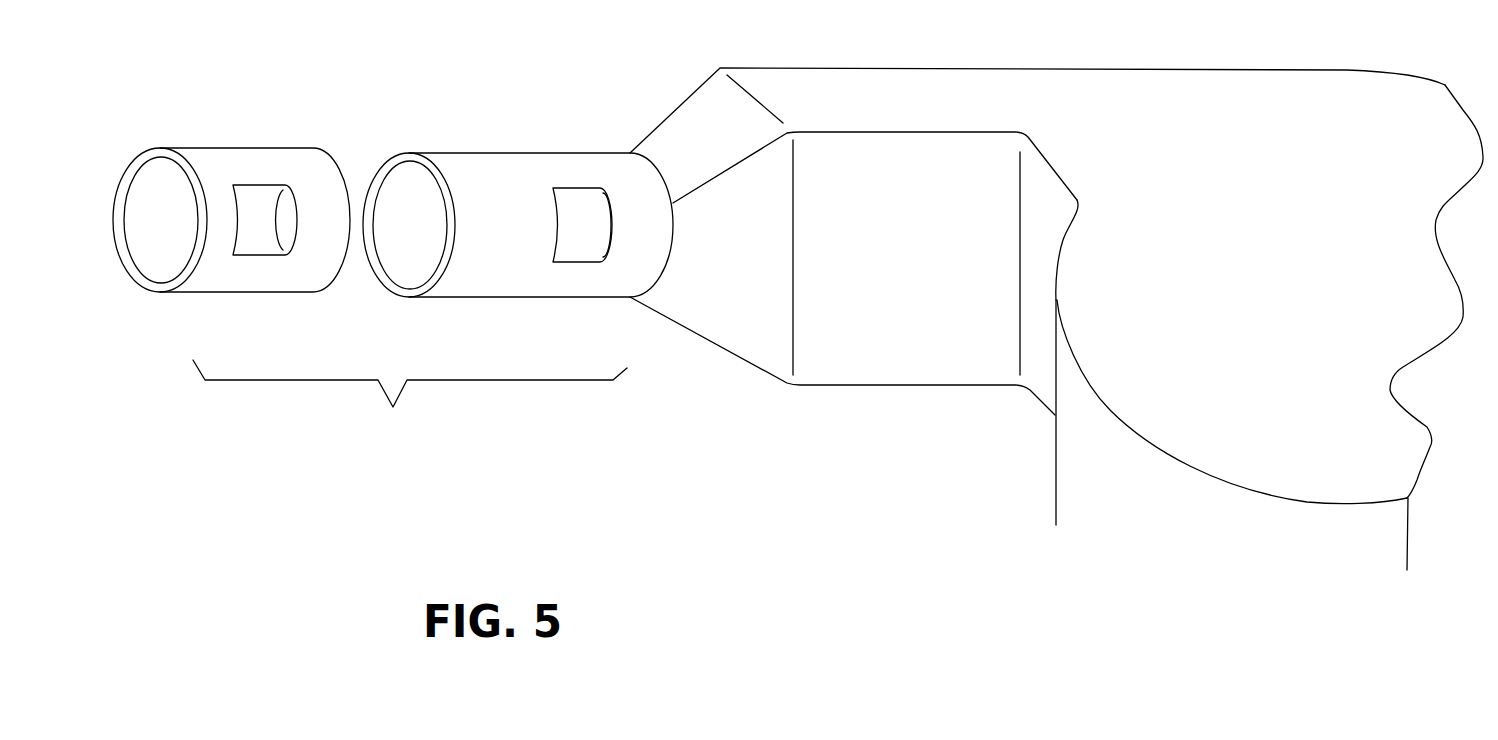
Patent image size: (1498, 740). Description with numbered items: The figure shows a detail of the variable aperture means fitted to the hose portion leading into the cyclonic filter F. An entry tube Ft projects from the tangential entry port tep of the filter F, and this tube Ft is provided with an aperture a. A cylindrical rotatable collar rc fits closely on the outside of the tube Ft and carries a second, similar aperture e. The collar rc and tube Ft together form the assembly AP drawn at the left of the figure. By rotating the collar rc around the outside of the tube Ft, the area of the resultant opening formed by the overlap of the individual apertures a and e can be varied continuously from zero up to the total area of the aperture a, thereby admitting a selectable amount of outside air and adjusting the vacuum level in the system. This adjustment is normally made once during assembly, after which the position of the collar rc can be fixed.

The rotatable collar rc is at (231, 214).
The aperture e is at (253, 248).
The entry tube Ft is at (518, 216).
The aperture a is at (573, 248).
The assembly of parts AP is at (410, 403).
The tangential entry port tep is at (910, 85).
The filter F is at (1056, 478).